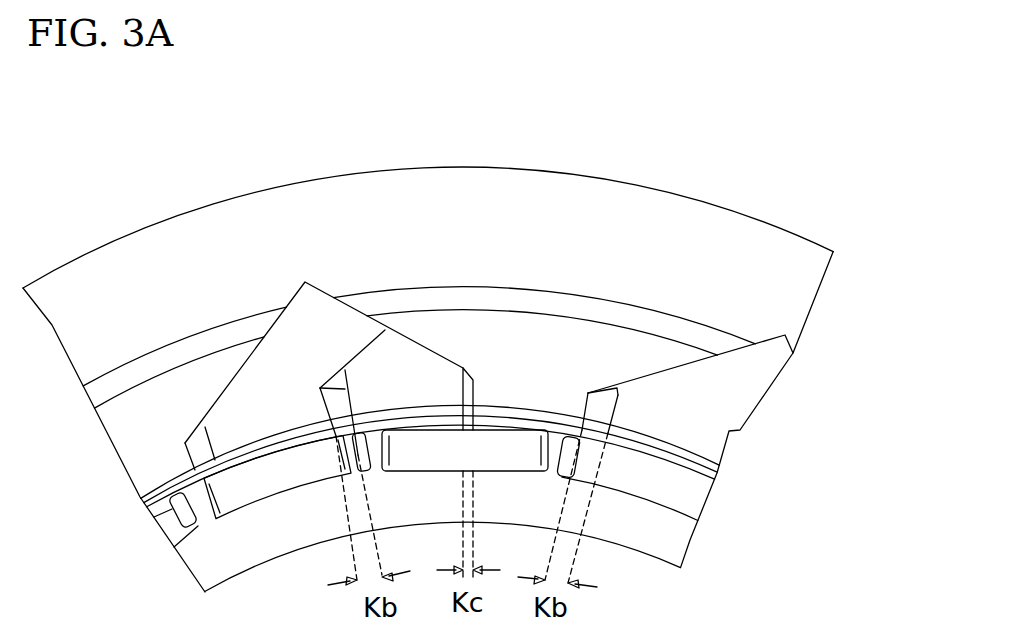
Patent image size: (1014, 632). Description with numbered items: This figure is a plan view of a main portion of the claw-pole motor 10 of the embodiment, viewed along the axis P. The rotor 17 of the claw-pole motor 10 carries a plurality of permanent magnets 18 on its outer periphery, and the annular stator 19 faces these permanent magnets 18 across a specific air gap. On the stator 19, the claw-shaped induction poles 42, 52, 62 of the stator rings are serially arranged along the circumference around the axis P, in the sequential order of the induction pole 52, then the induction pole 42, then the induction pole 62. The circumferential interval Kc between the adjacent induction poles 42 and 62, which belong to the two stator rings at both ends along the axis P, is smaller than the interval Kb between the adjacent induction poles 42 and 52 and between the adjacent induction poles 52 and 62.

The claw-pole motor 10 is at (619, 136).
The stator 19 is at (467, 184).
The rotor 17 is at (719, 478).
The permanent magnets 18 is at (500, 450).
The claw-shaped induction pole 52 is at (268, 423).
The claw-shaped induction pole 42 is at (407, 385).
The claw-shaped induction pole 62 is at (535, 393).